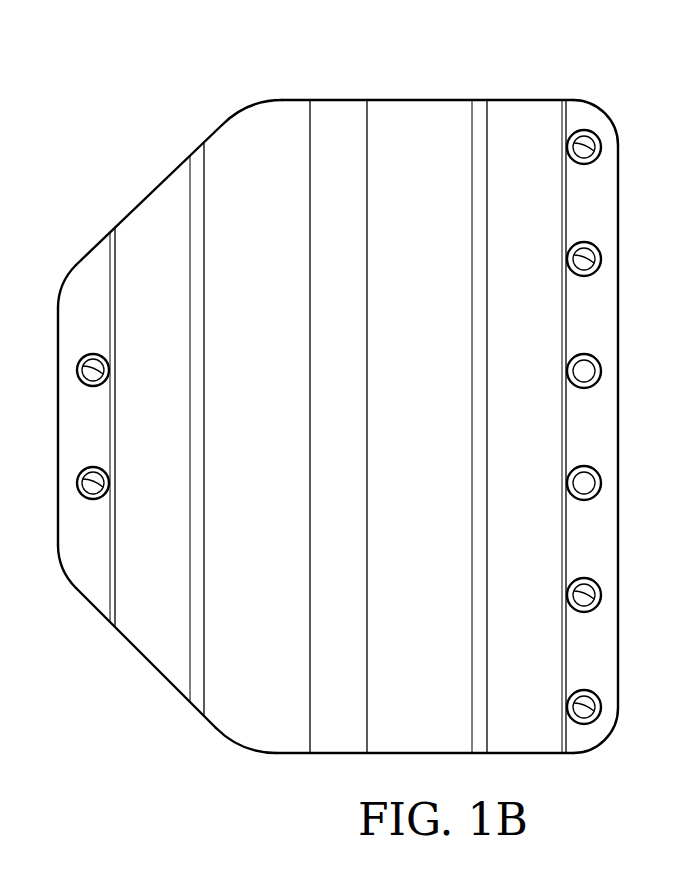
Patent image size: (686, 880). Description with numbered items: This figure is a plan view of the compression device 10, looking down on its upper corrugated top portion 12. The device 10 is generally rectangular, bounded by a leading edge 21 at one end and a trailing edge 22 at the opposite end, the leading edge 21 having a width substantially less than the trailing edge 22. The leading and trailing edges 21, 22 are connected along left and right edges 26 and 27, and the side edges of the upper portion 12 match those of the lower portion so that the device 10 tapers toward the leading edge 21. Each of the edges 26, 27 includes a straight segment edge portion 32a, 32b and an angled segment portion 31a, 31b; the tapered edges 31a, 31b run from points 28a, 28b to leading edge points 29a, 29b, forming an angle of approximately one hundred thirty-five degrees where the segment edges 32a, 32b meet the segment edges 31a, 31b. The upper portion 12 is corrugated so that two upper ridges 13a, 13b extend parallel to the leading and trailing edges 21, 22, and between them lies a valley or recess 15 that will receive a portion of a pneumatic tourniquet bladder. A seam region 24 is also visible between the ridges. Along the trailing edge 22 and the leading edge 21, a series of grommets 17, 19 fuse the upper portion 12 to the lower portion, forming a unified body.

The compression device 10 is at (278, 55).
The upper corrugated top portion 12 is at (175, 155).
The upper ridge 13a is at (200, 707).
The upper ridge 13b is at (480, 108).
The valley 15 is at (338, 120).
The grommets 17 is at (600, 147).
The grommets 19 is at (77, 371).
The leading edge 21 is at (58, 428).
The trailing edge 22 is at (622, 466).
The panel section 24 is at (419, 99).
The left edge 26 is at (320, 765).
The right edge 27 is at (382, 90).
The point 28a is at (248, 750).
The point 28b is at (246, 102).
The leading edge point 29a is at (62, 563).
The leading edge point 29b is at (64, 290).
The angled segment portion 31a is at (143, 655).
The angled segment portion 31b is at (143, 199).
The straight segment edge portion 32a is at (533, 756).
The straight segment edge portion 32b is at (534, 99).